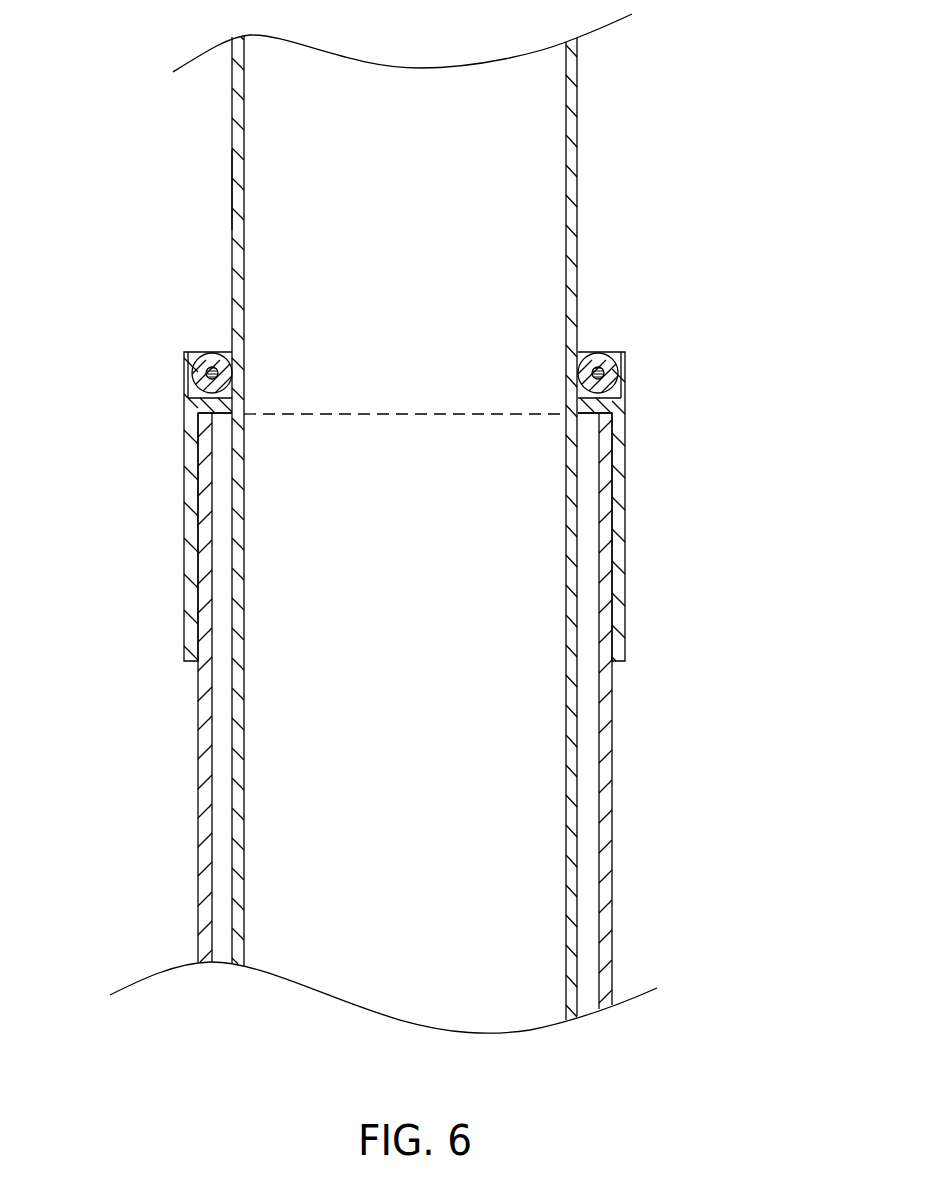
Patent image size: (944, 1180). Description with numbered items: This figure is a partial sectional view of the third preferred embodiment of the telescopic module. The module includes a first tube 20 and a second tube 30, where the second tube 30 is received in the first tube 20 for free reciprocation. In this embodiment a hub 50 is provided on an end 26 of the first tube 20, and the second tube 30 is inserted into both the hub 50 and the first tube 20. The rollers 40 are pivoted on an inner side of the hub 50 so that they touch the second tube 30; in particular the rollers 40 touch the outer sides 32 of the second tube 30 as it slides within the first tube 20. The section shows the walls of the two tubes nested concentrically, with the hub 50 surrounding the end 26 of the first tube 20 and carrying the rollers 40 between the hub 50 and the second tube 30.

The first tube 20 is at (621, 823).
The end 26 is at (392, 414).
The second tube 30 is at (590, 129).
The outer sides 32 is at (232, 193).
The rollers 40 is at (196, 355).
The hub 50 is at (192, 470).